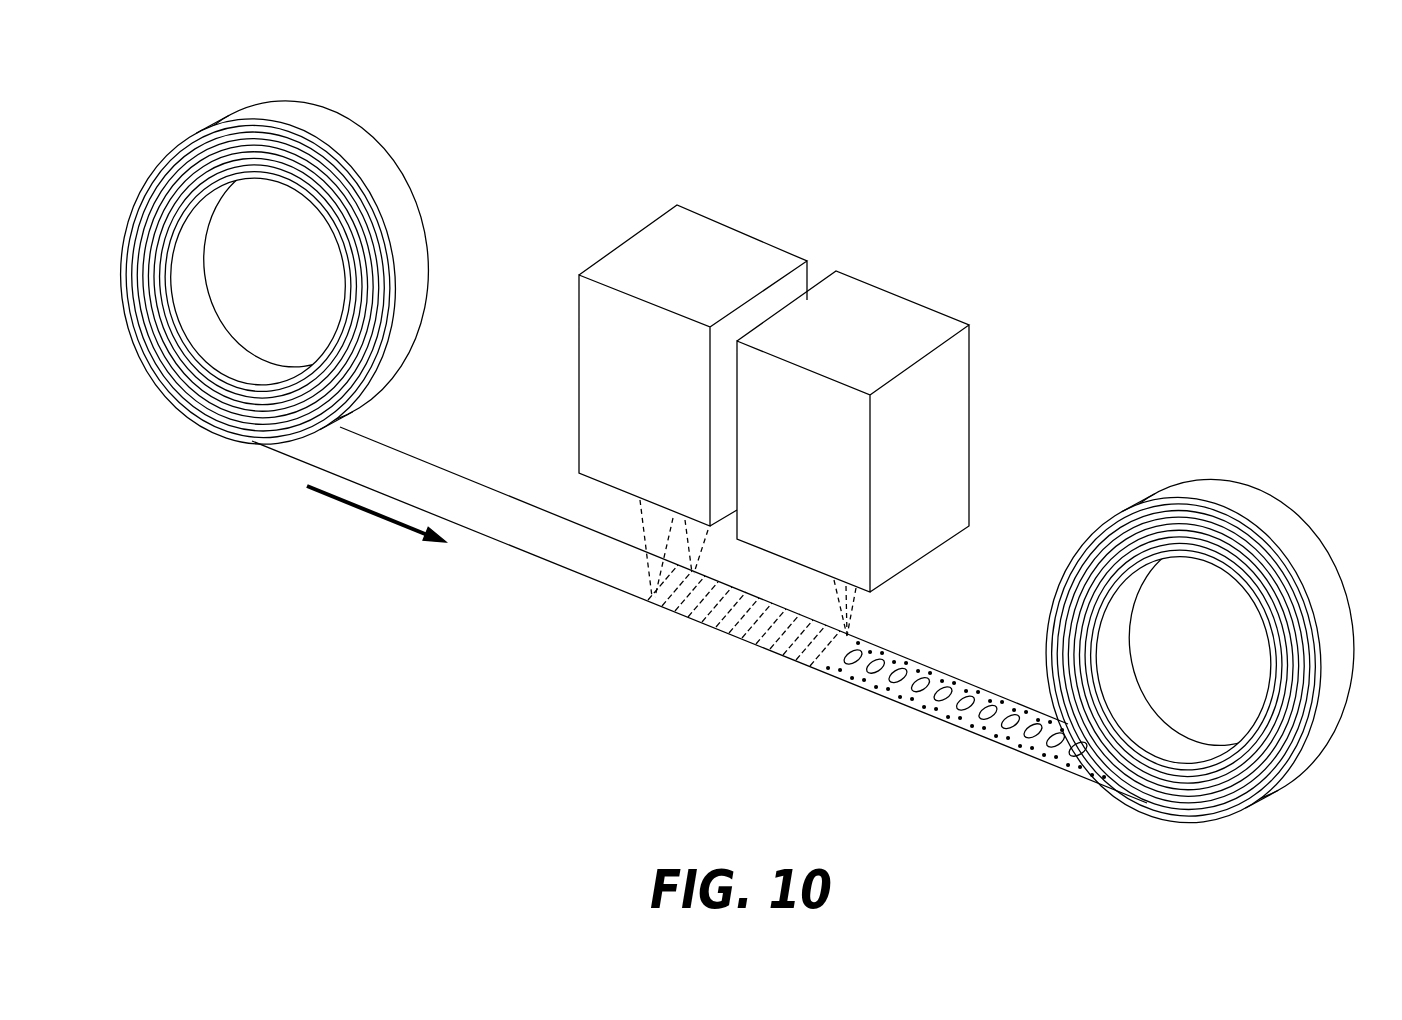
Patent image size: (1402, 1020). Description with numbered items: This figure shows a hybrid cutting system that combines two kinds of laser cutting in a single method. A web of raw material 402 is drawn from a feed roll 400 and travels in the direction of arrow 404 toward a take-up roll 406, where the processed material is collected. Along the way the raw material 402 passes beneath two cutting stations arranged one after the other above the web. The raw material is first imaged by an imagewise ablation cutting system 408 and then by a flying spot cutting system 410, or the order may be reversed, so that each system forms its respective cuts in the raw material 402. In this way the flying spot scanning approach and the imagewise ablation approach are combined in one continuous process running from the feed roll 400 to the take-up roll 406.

The feed roll 400 is at (322, 112).
The raw material 402 is at (427, 477).
The arrow 404 is at (358, 510).
The take-up roll 406 is at (1250, 492).
The imagewise ablation cutting system 408 is at (733, 226).
The flying spot cutting system 410 is at (897, 296).